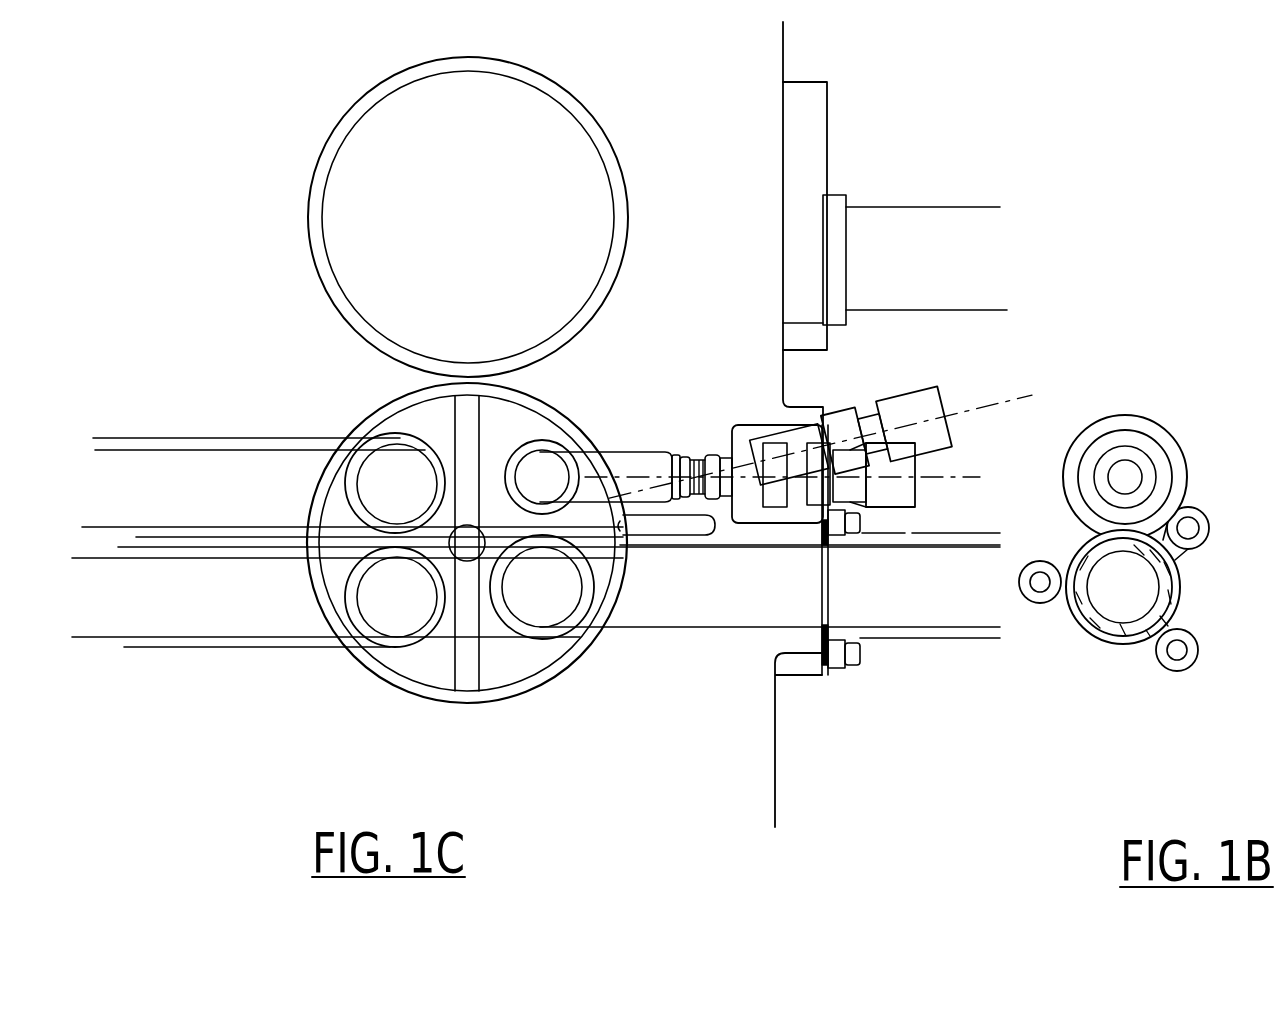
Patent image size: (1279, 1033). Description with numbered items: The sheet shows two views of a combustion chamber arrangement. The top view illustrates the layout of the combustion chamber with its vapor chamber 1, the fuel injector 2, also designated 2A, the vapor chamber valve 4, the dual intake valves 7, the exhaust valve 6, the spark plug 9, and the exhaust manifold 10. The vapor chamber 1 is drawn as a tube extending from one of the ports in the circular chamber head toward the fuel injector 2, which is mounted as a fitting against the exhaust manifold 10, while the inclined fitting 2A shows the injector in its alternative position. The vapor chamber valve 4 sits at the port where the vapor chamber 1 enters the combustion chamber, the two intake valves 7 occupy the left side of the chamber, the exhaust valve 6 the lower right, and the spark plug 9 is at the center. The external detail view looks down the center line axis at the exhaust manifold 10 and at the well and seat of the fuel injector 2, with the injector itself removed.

In FIG. 1C, the vapor chamber 1 is at (618, 463).
In FIG. 1C, the fuel injector 2 is at (900, 485).
In FIG. 1B, the fuel injector 2 is at (1127, 450).
In FIG. 1C, the fuel injector 2A is at (912, 398).
In FIG. 1C, the vapor chamber valve 4 is at (545, 470).
In FIG. 1C, the exhaust valve 6 is at (562, 603).
In FIG. 1C, the intake valves 7 is at (393, 467).
In FIG. 1C, the spark plug 9 is at (467, 555).
In FIG. 1C, the exhaust manifold 10 is at (933, 607).
In FIG. 1B, the exhaust manifold 10 is at (1123, 610).